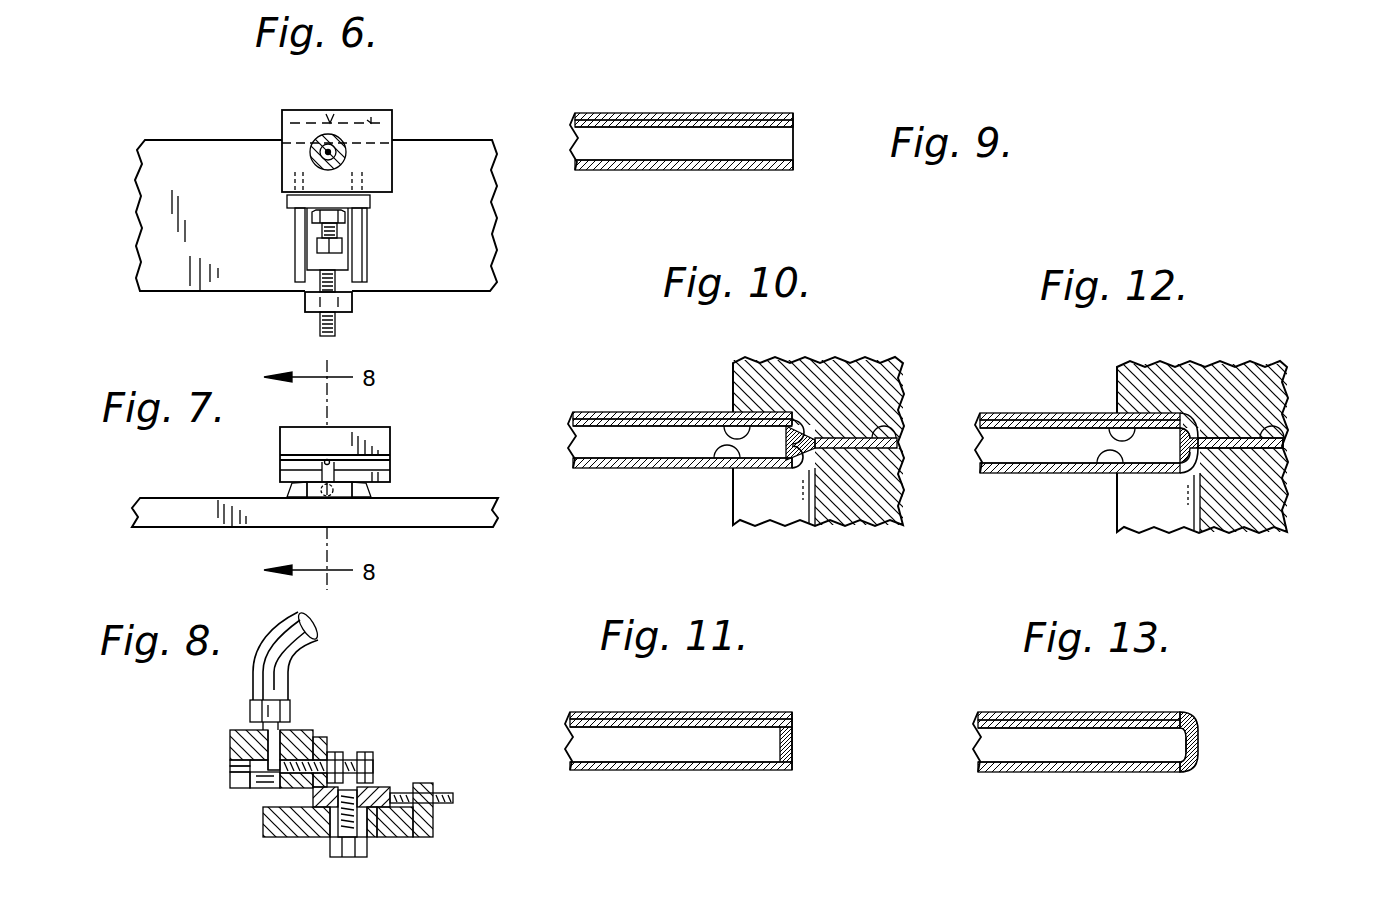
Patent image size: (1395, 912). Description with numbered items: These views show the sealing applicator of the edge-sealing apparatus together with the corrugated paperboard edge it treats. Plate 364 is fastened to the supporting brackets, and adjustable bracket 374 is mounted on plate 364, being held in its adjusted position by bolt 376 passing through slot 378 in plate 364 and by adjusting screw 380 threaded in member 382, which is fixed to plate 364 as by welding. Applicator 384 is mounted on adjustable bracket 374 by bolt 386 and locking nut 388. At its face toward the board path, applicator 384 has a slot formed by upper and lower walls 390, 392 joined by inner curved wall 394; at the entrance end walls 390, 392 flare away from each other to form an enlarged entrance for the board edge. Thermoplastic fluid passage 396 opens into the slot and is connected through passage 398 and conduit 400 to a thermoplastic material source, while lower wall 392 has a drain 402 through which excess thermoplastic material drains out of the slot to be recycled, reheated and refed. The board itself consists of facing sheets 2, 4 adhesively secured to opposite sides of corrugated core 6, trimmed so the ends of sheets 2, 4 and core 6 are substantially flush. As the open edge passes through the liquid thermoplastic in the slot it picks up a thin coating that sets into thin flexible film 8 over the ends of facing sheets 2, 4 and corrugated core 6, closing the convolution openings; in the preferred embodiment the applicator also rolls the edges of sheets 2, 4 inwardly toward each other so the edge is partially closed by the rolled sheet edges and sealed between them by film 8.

In FIG. 9, the facing sheet 2 is at (693, 112).
In FIG. 10, the facing sheet 2 is at (597, 387).
In FIG. 12, the facing sheet 2 is at (1010, 413).
In FIG. 11, the facing sheet 2 is at (632, 692).
In FIG. 13, the facing sheet 2 is at (1024, 692).
In FIG. 9, the facing sheet 4 is at (693, 171).
In FIG. 10, the facing sheet 4 is at (629, 466).
In FIG. 12, the facing sheet 4 is at (990, 476).
In FIG. 11, the facing sheet 4 is at (671, 771).
In FIG. 13, the facing sheet 4 is at (1061, 772).
In FIG. 9, the corrugated core 6 is at (630, 142).
In FIG. 10, the corrugated core 6 is at (597, 445).
In FIG. 12, the corrugated core 6 is at (982, 450).
In FIG. 11, the corrugated core 6 is at (693, 735).
In FIG. 13, the corrugated core 6 is at (1081, 738).
In FIG. 10, the thin flexible film 8 is at (784, 426).
In FIG. 12, the thin flexible film 8 is at (1177, 428).
In FIG. 11, the thin flexible film 8 is at (795, 746).
In FIG. 13, the thin flexible film 8 is at (1200, 745).
In FIG. 6, the plate 364 is at (155, 142).
In FIG. 7, the plate 364 is at (500, 512).
In FIG. 8, the plate 364 is at (262, 823).
In FIG. 7, the adjustable bracket 374 is at (340, 498).
In FIG. 8, the adjustable bracket 374 is at (323, 740).
In FIG. 8, the bolt 376 is at (328, 848).
In FIG. 8, the slot 378 is at (395, 826).
In FIG. 6, the adjusting screw 380 is at (336, 323).
In FIG. 8, the adjusting screw 380 is at (403, 791).
In FIG. 6, the member 382 is at (305, 298).
In FIG. 8, the member 382 is at (435, 822).
In FIG. 6, the applicator 384 is at (385, 166).
In FIG. 7, the applicator 384 is at (290, 439).
In FIG. 8, the applicator 384 is at (230, 745).
In FIG. 10, the applicator 384 is at (874, 370).
In FIG. 12, the applicator 384 is at (1253, 368).
In FIG. 6, the bolt 386 is at (318, 246).
In FIG. 7, the bolt 386 is at (320, 497).
In FIG. 8, the bolt 386 is at (368, 754).
In FIG. 6, the locking nut 388 is at (346, 219).
In FIG. 8, the locking nut 388 is at (338, 754).
In FIG. 6, the upper wall 390 is at (378, 116).
In FIG. 7, the upper wall 390 is at (385, 462).
In FIG. 8, the upper wall 390 is at (233, 763).
In FIG. 10, the upper wall 390 is at (738, 412).
In FIG. 12, the upper wall 390 is at (1099, 413).
In FIG. 6, the lower wall 392 is at (296, 111).
In FIG. 7, the lower wall 392 is at (386, 468).
In FIG. 8, the lower wall 392 is at (236, 769).
In FIG. 10, the lower wall 392 is at (714, 462).
In FIG. 12, the lower wall 392 is at (1091, 467).
In FIG. 8, the inner curved wall 394 is at (233, 760).
In FIG. 10, the inner curved wall 394 is at (806, 432).
In FIG. 12, the inner curved wall 394 is at (1196, 432).
In FIG. 7, the thermoplastic fluid passage 396 is at (330, 460).
In FIG. 8, the thermoplastic fluid passage 396 is at (252, 780).
In FIG. 10, the thermoplastic fluid passage 396 is at (886, 428).
In FIG. 12, the thermoplastic fluid passage 396 is at (1270, 432).
In FIG. 6, the passage 398 is at (318, 150).
In FIG. 8, the passage 398 is at (262, 735).
In FIG. 6, the conduit 400 is at (348, 150).
In FIG. 8, the conduit 400 is at (296, 614).
In FIG. 6, the drain 402 is at (336, 112).
In FIG. 7, the drain 402 is at (322, 472).
In FIG. 8, the drain 402 is at (232, 781).
In FIG. 10, the drain 402 is at (772, 518).
In FIG. 12, the drain 402 is at (1162, 512).